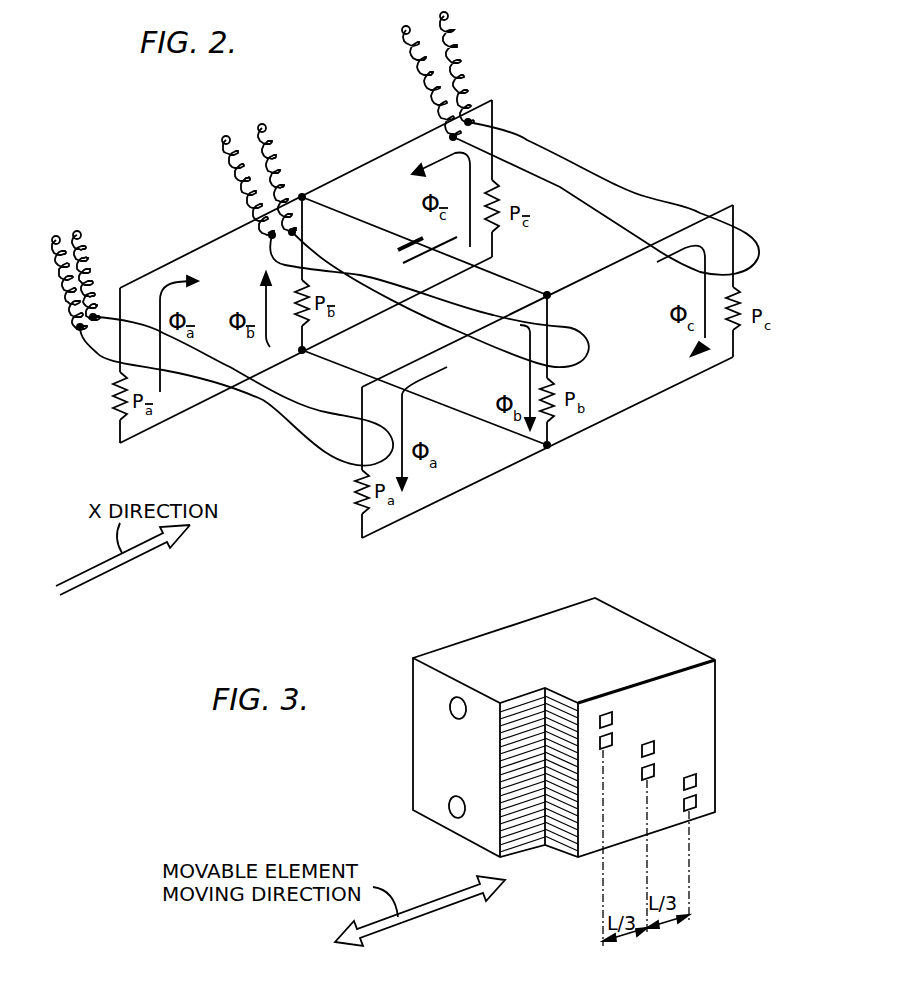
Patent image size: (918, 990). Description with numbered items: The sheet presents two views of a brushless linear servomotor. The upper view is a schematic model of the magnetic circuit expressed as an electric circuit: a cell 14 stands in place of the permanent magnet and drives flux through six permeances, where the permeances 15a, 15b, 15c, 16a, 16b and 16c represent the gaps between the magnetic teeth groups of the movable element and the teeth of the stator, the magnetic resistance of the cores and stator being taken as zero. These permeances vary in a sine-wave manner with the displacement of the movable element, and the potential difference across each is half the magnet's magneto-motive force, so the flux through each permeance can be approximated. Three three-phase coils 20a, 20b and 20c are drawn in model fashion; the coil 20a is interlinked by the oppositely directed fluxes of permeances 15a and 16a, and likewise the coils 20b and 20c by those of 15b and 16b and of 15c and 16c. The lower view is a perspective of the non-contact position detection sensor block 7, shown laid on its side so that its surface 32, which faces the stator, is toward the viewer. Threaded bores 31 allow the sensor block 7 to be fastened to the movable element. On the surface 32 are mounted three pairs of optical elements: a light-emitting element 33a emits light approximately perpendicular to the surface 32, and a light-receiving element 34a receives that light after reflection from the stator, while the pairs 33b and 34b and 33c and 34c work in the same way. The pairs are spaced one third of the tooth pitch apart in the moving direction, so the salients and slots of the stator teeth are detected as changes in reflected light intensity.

In FIG. 2, the cell 14 is at (415, 240).
In FIG. 2, the permeance 15a is at (360, 505).
In FIG. 2, the permeance 15b is at (557, 420).
In FIG. 2, the permeance 15c is at (738, 330).
In FIG. 2, the permeance 16a is at (115, 395).
In FIG. 2, the permeance 16b is at (300, 287).
In FIG. 2, the permeance 16c is at (493, 227).
In FIG. 2, the three-phase coil 20a is at (303, 430).
In FIG. 2, the three-phase coil 20b is at (497, 340).
In FIG. 2, the three-phase coil 20c is at (750, 267).
In FIG. 3, the non-contact position detection sensor block 7 is at (535, 623).
In FIG. 3, the threaded bores 31 is at (447, 803).
In FIG. 3, the surface of sensor block 32 is at (588, 833).
In FIG. 3, the light-emitting element 33a is at (614, 712).
In FIG. 3, the light-receiving element 34a is at (614, 738).
In FIG. 3, the light-emitting element 33b is at (656, 745).
In FIG. 3, the light-receiving element 34b is at (656, 770).
In FIG. 3, the light-emitting element 33c is at (698, 779).
In FIG. 3, the light-receiving element 34c is at (698, 802).